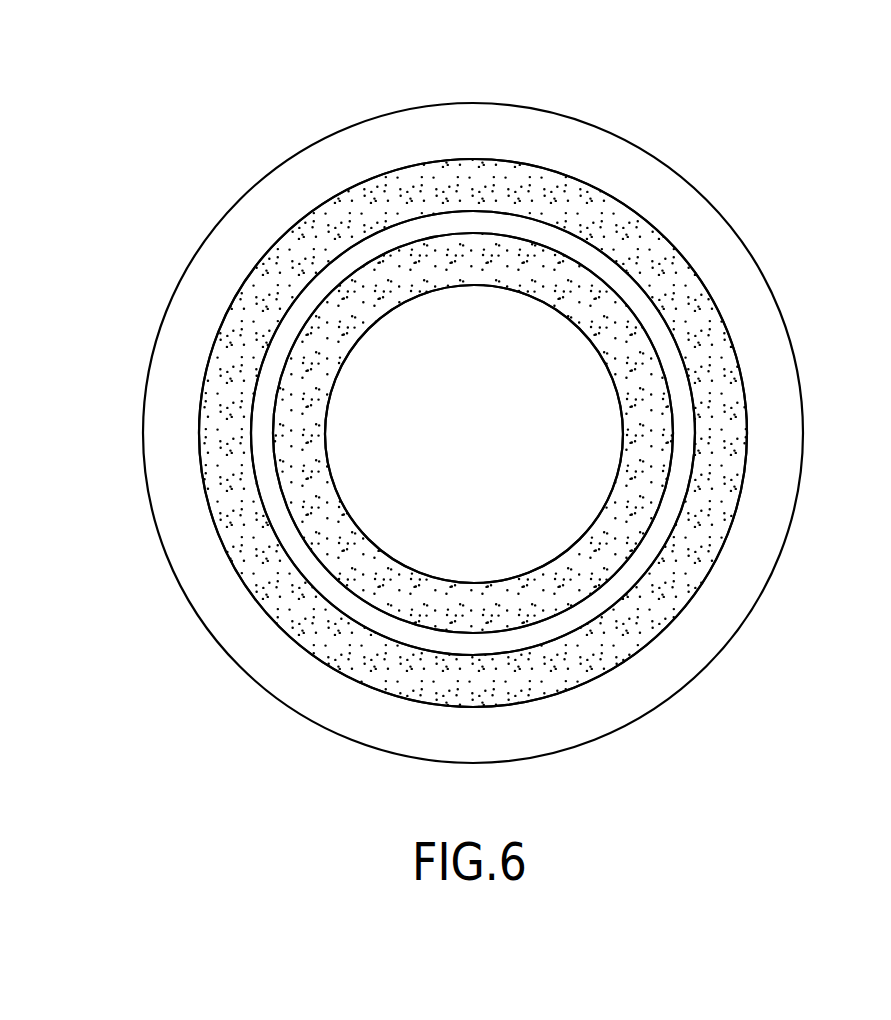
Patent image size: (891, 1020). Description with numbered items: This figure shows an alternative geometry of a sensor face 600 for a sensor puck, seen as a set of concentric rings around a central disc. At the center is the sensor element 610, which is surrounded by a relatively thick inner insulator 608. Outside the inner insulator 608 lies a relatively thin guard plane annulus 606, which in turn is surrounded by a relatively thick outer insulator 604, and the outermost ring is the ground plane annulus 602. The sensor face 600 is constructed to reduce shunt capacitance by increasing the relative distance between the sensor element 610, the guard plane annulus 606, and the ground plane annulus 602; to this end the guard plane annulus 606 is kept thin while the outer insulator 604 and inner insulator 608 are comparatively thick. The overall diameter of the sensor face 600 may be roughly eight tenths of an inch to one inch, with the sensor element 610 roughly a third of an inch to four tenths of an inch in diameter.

The sensor face 600 is at (504, 403).
The ground plane annulus 602 is at (722, 250).
The outer insulator 604 is at (717, 370).
The guard plane annulus 606 is at (675, 502).
The inner insulator 608 is at (605, 557).
The sensor element 610 is at (483, 458).